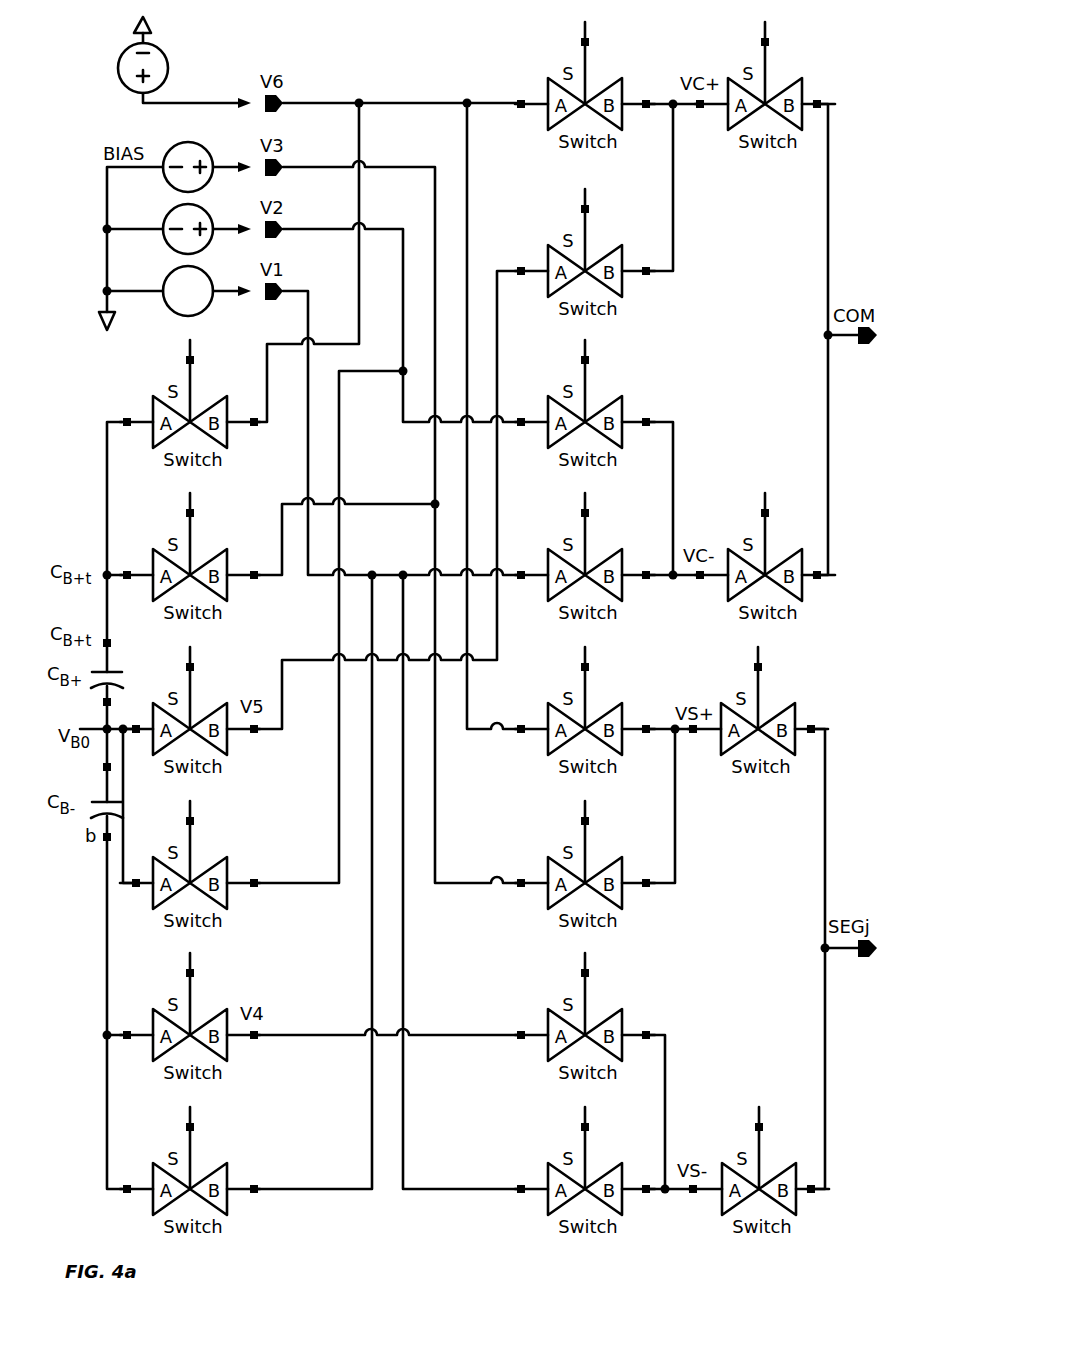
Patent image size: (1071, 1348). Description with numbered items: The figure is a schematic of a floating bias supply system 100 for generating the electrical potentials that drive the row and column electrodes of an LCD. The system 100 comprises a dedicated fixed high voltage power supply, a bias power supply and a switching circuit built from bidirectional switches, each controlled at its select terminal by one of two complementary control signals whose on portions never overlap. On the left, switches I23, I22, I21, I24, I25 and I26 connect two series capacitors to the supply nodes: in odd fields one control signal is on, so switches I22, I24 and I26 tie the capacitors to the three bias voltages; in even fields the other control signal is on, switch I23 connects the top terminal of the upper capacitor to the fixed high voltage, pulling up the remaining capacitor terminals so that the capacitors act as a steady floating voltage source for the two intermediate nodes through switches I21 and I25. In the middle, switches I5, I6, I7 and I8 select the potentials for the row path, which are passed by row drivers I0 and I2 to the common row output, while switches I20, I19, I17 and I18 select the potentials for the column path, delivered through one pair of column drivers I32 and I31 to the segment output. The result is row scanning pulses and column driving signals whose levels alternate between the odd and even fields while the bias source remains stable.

The floating VBIAS supply system 100 is at (126, 38).
The switch I5 is at (585, 87).
The switch I6 is at (585, 254).
The switch I7 is at (585, 405).
The switch I8 is at (585, 558).
The switch I0 is at (765, 87).
The switch I2 is at (765, 558).
The switch I20 is at (585, 712).
The switch I19 is at (585, 866).
The switch I17 is at (585, 1018).
The switch I18 is at (585, 1172).
The SEG/column driver I32 is at (758, 711).
The SEG/column driver I31 is at (759, 1171).
The switch I23 is at (190, 405).
The switch I22 is at (190, 558).
The switch I21 is at (190, 712).
The switch I24 is at (190, 866).
The switch I25 is at (190, 1018).
The switch I26 is at (190, 1172).